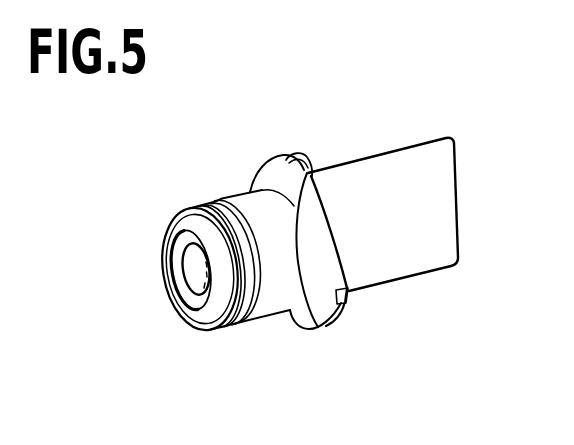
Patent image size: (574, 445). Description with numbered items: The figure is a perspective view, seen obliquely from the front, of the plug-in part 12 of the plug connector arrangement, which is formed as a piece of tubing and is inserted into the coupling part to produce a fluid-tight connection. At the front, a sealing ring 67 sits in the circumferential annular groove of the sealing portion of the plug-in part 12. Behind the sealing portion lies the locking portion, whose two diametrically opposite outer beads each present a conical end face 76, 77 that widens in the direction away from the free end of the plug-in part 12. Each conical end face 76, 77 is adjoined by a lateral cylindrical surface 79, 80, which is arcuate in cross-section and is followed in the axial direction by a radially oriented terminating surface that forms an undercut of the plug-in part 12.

The plug-in part 12 is at (390, 315).
The sealing ring 67 is at (242, 312).
The conical end face 76 is at (270, 170).
The conical end face 77 is at (312, 310).
The lateral cylindrical surface 79 is at (298, 157).
The lateral cylindrical surface 80 is at (344, 304).